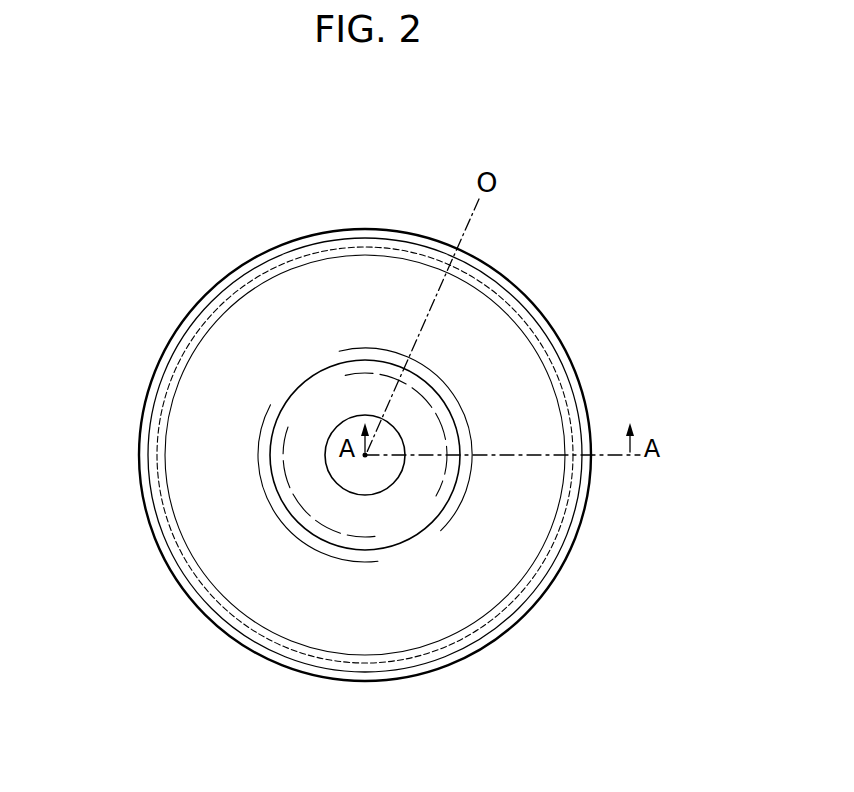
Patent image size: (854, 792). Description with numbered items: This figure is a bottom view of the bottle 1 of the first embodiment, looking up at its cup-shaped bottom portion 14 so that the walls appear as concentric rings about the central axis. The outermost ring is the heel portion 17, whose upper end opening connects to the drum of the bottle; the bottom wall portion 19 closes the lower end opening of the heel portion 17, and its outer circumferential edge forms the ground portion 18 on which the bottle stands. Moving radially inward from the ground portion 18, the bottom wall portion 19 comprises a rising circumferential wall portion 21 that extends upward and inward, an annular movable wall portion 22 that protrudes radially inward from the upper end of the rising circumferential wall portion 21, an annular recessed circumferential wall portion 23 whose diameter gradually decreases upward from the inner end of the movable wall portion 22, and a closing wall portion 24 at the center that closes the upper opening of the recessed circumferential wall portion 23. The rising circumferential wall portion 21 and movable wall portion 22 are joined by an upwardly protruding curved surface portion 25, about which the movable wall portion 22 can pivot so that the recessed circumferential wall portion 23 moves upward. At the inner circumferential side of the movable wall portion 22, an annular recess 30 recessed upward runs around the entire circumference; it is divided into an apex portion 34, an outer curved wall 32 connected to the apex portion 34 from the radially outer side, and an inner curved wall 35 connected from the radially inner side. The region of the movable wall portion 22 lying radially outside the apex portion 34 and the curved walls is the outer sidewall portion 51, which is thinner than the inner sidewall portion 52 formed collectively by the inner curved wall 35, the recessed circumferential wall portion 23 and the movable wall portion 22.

The bottle 1 is at (578, 145).
The bottom portion 14 is at (689, 280).
The heel portion 17 is at (562, 326).
The ground portion 18 is at (577, 484).
The bottom wall portion 19 is at (569, 380).
The rising circumferential wall portion 21 is at (545, 559).
The movable wall portion 22 is at (463, 588).
The recessed circumferential wall portion 23 is at (359, 411).
The closing wall portion 24 is at (345, 473).
The curved surface portion 25 is at (485, 298).
The annular recess 30 is at (303, 530).
The outer curved wall 32 is at (270, 495).
The apex portion 34 is at (268, 445).
The inner curved wall 35 is at (292, 393).
The outer sidewall portion 51 is at (358, 607).
The inner sidewall portion 52 is at (325, 395).